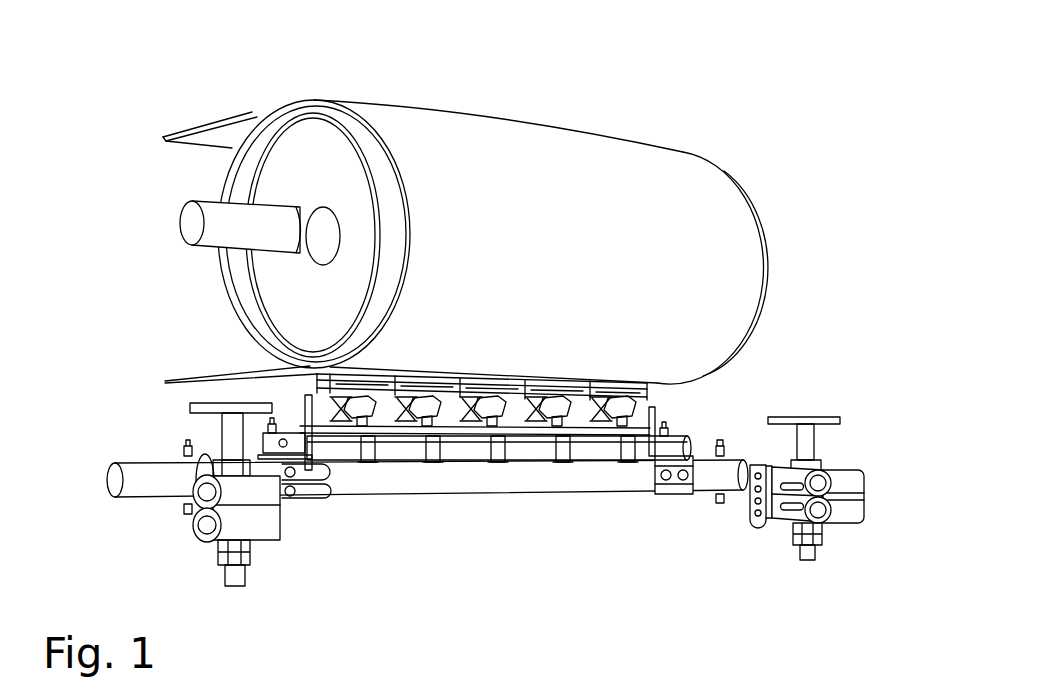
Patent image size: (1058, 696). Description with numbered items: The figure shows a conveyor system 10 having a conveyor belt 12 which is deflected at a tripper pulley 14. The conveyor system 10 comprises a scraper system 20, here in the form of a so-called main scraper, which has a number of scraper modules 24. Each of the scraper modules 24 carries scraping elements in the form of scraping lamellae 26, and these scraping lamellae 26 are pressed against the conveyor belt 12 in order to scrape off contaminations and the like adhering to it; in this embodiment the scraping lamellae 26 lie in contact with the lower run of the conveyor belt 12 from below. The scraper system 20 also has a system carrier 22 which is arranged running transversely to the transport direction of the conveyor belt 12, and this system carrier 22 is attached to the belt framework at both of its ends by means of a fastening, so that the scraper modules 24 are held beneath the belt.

The conveyor system 10 is at (848, 62).
The conveyor belt 12 is at (247, 117).
The tripper pulley 14 is at (770, 257).
The scraper system 20 is at (582, 570).
The system carrier 22 is at (713, 477).
The scraper modules 24 is at (553, 413).
The scraping lamellae 26 is at (547, 380).